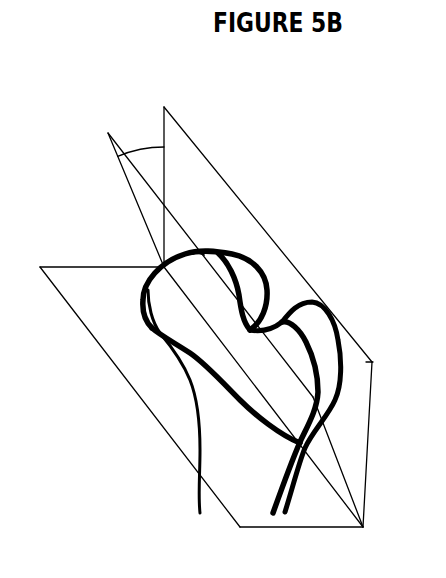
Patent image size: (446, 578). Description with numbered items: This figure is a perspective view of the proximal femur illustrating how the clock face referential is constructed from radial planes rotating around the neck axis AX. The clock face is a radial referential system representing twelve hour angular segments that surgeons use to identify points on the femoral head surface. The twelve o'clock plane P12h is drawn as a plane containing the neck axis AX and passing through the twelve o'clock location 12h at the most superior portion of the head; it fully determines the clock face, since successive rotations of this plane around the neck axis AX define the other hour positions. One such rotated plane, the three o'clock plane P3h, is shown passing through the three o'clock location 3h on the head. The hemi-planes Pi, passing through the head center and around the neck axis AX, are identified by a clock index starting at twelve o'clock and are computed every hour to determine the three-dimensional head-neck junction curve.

The 12 o'clock plane P12h is at (268, 313).
The 3 o'clock plane P3h is at (196, 379).
The hemi-planes Pi is at (202, 255).
The neck axis AX is at (352, 474).
The 12 o'clock location 12h is at (208, 288).
The 3 o'clock location 3h is at (213, 401).